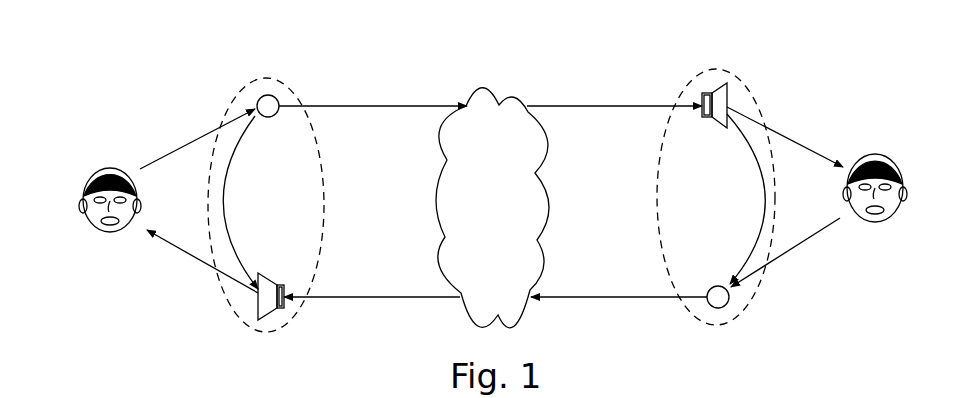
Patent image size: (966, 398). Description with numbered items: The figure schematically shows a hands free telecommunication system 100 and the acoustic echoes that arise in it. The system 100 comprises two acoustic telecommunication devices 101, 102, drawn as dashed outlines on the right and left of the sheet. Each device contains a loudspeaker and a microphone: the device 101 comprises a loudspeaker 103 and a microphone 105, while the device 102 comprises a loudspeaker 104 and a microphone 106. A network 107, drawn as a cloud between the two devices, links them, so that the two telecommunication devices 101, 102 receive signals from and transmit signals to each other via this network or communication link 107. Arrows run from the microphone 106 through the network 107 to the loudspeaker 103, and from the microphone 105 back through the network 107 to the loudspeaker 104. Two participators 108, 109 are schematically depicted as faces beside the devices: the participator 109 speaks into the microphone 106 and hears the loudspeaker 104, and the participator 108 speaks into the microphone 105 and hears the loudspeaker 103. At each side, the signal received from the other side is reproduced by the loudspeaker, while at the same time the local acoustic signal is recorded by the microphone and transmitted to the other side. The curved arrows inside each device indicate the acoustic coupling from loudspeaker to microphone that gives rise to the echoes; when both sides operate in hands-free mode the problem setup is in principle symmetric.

The telecommunication system 100 is at (623, 67).
The acoustic telecommunication device 101 is at (758, 103).
The acoustic telecommunication device 102 is at (293, 90).
The loudspeaker 103 is at (728, 90).
The loudspeaker 104 is at (258, 311).
The microphone 105 is at (723, 308).
The microphone 106 is at (257, 97).
The network 107 is at (497, 90).
The participator 108 is at (887, 155).
The participator 109 is at (100, 167).